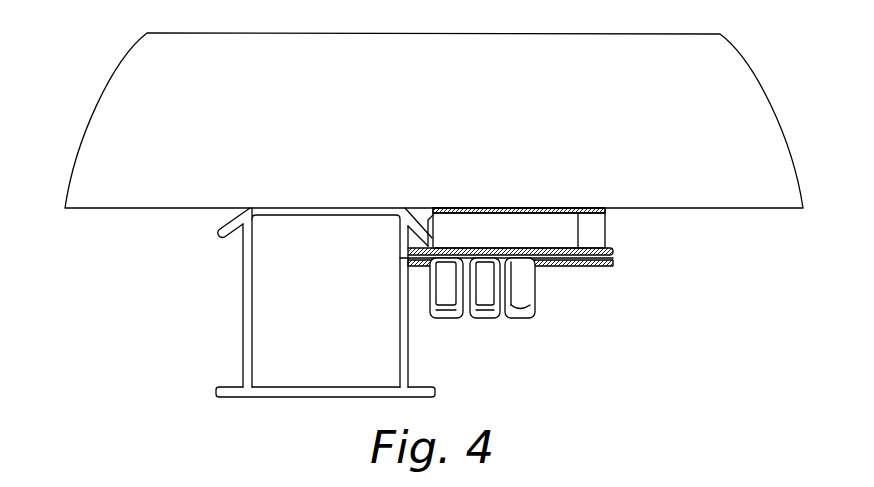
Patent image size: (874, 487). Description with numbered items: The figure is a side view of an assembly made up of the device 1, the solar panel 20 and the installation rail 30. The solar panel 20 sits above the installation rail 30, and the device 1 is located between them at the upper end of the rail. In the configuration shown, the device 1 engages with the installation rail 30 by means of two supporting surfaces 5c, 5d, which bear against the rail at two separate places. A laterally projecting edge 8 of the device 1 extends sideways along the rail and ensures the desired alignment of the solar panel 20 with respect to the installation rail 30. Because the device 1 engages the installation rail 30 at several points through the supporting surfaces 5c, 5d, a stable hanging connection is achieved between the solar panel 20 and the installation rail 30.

The solar panel 20 is at (140, 118).
The installation rail 30 is at (240, 327).
The supporting surface 5c is at (423, 214).
The supporting surface 5d is at (407, 258).
The laterally projecting edge 8 is at (613, 258).
The device 1 is at (547, 312).